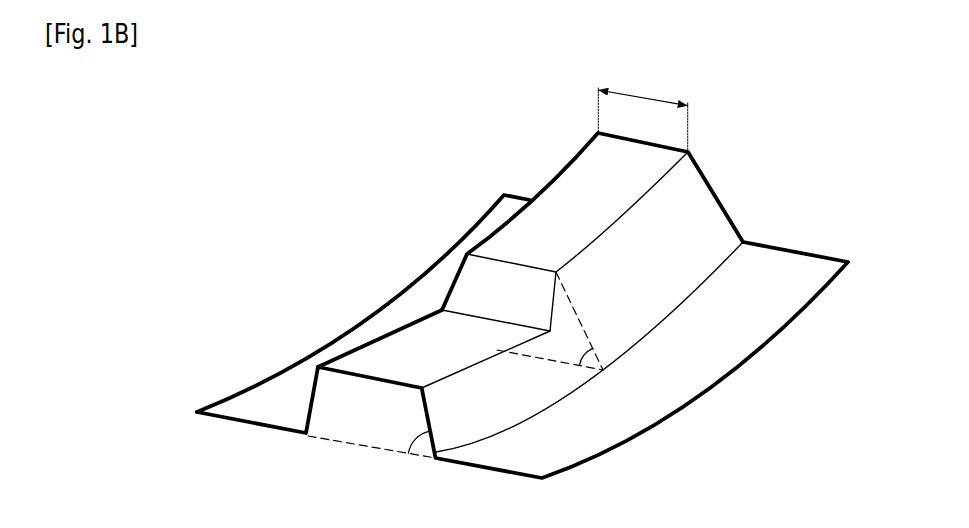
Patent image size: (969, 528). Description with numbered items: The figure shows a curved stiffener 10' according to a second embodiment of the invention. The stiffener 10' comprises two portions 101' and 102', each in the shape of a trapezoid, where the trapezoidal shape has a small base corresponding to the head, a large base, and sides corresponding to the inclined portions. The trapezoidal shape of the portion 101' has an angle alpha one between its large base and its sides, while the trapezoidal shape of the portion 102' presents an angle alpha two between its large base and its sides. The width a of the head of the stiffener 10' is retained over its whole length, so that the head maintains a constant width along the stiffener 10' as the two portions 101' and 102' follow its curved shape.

The stiffener 10' is at (522, 273).
The portion 101' is at (522, 336).
The portion 102' is at (592, 219).